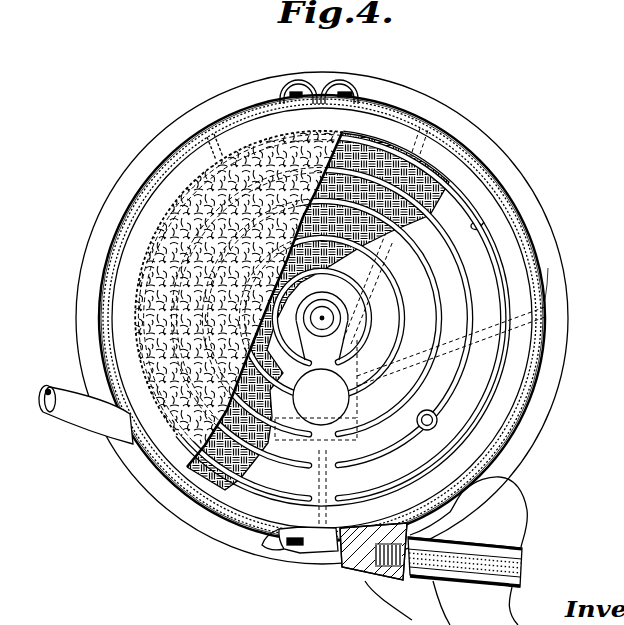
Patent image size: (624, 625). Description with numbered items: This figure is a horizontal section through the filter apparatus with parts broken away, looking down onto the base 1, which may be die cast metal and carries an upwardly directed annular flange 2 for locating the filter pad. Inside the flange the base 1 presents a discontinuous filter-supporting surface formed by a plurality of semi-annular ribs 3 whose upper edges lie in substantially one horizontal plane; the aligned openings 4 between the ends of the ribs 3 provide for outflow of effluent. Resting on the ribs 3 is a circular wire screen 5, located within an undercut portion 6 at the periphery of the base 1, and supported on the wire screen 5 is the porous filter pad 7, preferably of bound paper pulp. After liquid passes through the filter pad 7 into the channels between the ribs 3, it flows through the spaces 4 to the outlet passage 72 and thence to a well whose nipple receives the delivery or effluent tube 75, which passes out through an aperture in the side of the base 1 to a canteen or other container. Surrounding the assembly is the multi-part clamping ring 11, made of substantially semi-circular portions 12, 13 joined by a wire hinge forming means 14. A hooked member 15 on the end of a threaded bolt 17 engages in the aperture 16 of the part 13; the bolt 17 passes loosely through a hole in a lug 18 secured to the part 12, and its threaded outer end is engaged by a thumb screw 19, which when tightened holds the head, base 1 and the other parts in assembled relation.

The base 1 is at (564, 324).
The annular flange 2 is at (529, 392).
The semi-annular ribs 3 is at (372, 318).
The openings 4 is at (362, 430).
The wire screen 5 is at (445, 175).
The undercut portion 6 is at (472, 227).
The filter pad 7 is at (217, 200).
The clamping ring 11 is at (552, 268).
The semi-circular portion 12 is at (409, 115).
The semi-circular portion 13 is at (220, 117).
The wire hinge forming means 14 is at (313, 83).
The hooked member 15 is at (287, 545).
The aperture 16 is at (277, 535).
The threaded bolt 17 is at (355, 550).
The lug 18 is at (392, 579).
The thumb screw 19 is at (520, 515).
The outlet passage 72 is at (318, 380).
The delivery tube 75 is at (72, 420).